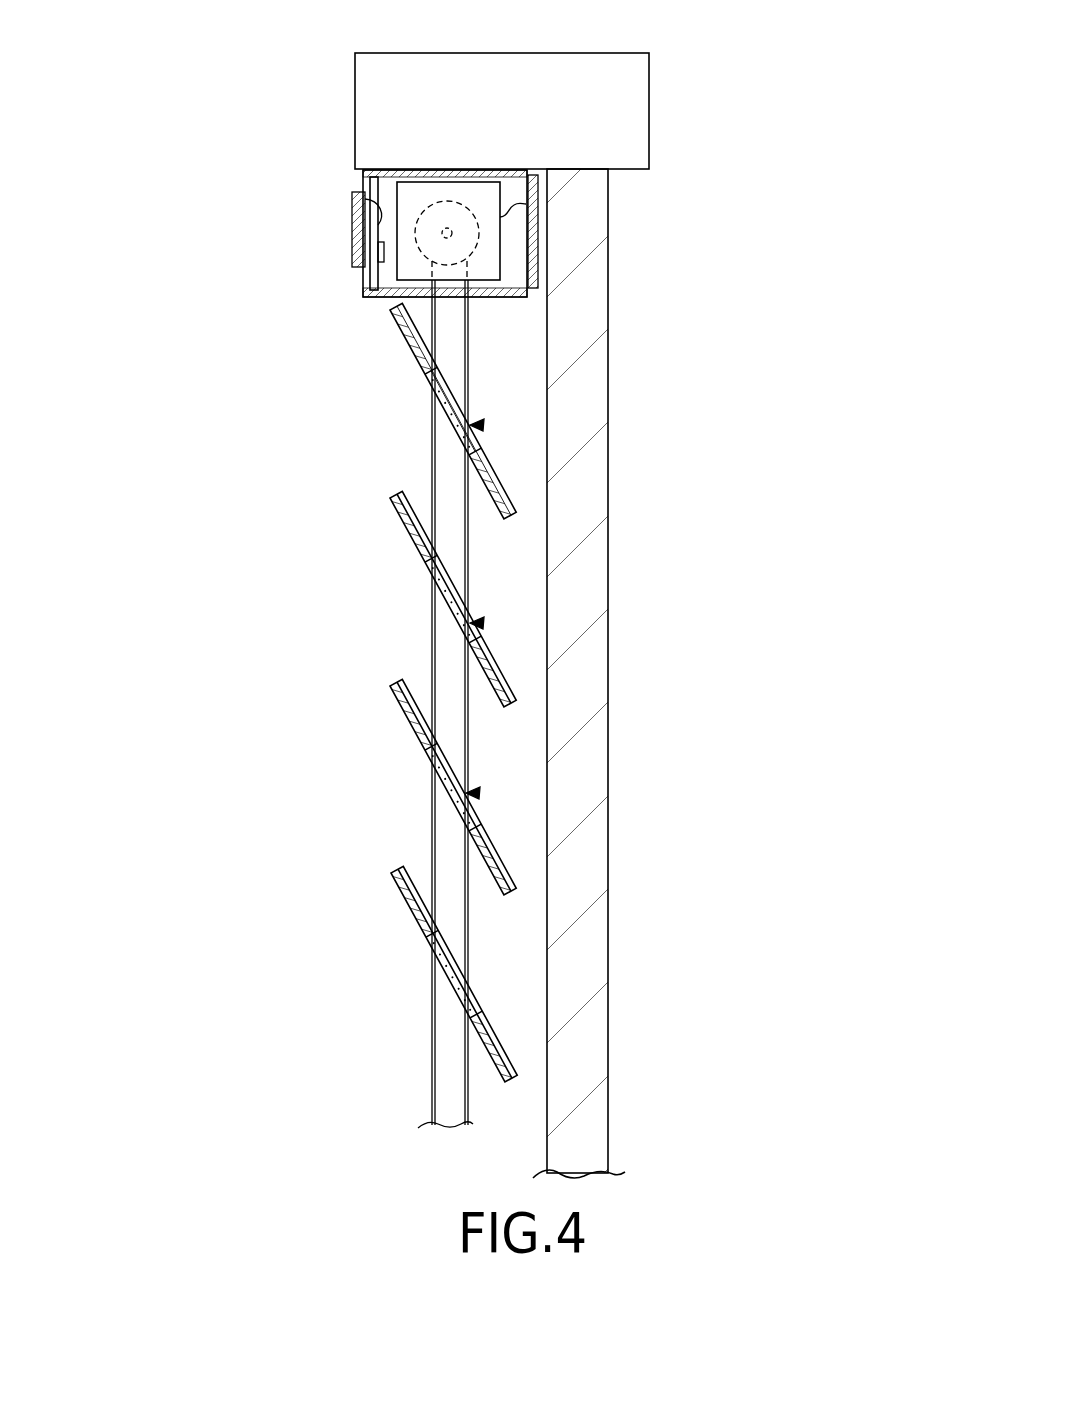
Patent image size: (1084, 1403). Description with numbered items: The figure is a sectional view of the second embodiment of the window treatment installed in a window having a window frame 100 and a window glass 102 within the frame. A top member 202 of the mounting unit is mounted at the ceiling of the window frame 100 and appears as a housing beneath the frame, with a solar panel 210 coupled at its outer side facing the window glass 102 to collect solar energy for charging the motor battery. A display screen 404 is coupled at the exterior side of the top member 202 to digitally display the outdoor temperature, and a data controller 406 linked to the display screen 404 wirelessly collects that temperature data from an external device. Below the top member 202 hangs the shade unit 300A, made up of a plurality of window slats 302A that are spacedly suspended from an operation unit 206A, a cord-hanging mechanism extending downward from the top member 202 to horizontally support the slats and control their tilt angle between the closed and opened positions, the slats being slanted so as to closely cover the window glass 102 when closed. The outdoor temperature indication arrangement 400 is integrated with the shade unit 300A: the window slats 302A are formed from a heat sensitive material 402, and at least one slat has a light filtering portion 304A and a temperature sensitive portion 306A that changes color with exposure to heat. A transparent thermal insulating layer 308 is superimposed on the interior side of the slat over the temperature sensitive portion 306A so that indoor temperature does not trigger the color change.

The window frame 100 is at (597, 121).
The window glass 102 is at (585, 1128).
The top member 202 is at (400, 172).
The solar panel 210 is at (532, 242).
The display screen 404 is at (355, 238).
The data controller 406 is at (375, 267).
The operation unit 206A is at (467, 933).
The shade unit 300A is at (240, 675).
The window slat 302A is at (314, 692).
The light filtering portion 304A is at (453, 411).
The temperature sensitive portion 306A is at (453, 411).
The transparent thermal insulating layer 308 is at (452, 411).
The outdoor temperature indication arrangement 400 is at (788, 457).
The heat sensitive material 402 is at (483, 426).